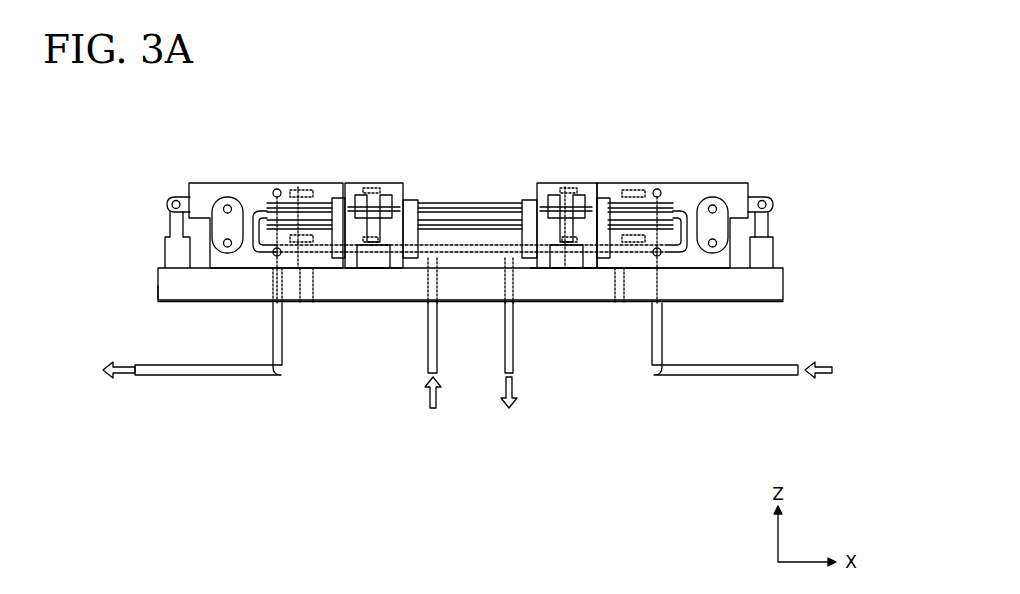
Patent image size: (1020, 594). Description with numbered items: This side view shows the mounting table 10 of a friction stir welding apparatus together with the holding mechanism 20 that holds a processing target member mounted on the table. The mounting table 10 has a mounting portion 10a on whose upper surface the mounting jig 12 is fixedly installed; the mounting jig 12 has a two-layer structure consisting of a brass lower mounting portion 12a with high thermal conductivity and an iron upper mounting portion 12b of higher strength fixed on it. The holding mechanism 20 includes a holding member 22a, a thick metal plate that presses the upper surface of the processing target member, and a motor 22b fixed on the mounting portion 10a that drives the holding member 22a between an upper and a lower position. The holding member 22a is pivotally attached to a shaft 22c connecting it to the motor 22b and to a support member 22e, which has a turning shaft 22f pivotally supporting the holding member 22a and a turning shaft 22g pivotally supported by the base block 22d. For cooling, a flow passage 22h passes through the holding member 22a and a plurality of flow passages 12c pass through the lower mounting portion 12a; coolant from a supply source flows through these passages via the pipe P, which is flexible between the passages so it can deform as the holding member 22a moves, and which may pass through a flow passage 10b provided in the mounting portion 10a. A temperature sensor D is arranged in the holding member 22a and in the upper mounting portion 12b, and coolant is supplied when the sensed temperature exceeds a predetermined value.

The mounting table 10 is at (156, 272).
The mounting portion 10a is at (156, 296).
The flow passage 10b is at (533, 307).
The mounting jig 12 is at (470, 318).
The lower mounting portion 12a is at (252, 290).
The upper mounting portion 12b is at (166, 205).
The flow passages 12c is at (313, 292).
The holding mechanism 20 is at (205, 178).
The holding member 22a is at (393, 195).
The motor 22b is at (765, 257).
The shaft 22c is at (762, 230).
The base block 22d is at (738, 260).
The support member 22e is at (432, 221).
The turning shaft 22f is at (327, 196).
The turning shaft 22g is at (443, 298).
The flow passage 22h is at (363, 185).
The temperature sensor D is at (297, 185).
The pipe P is at (244, 196).